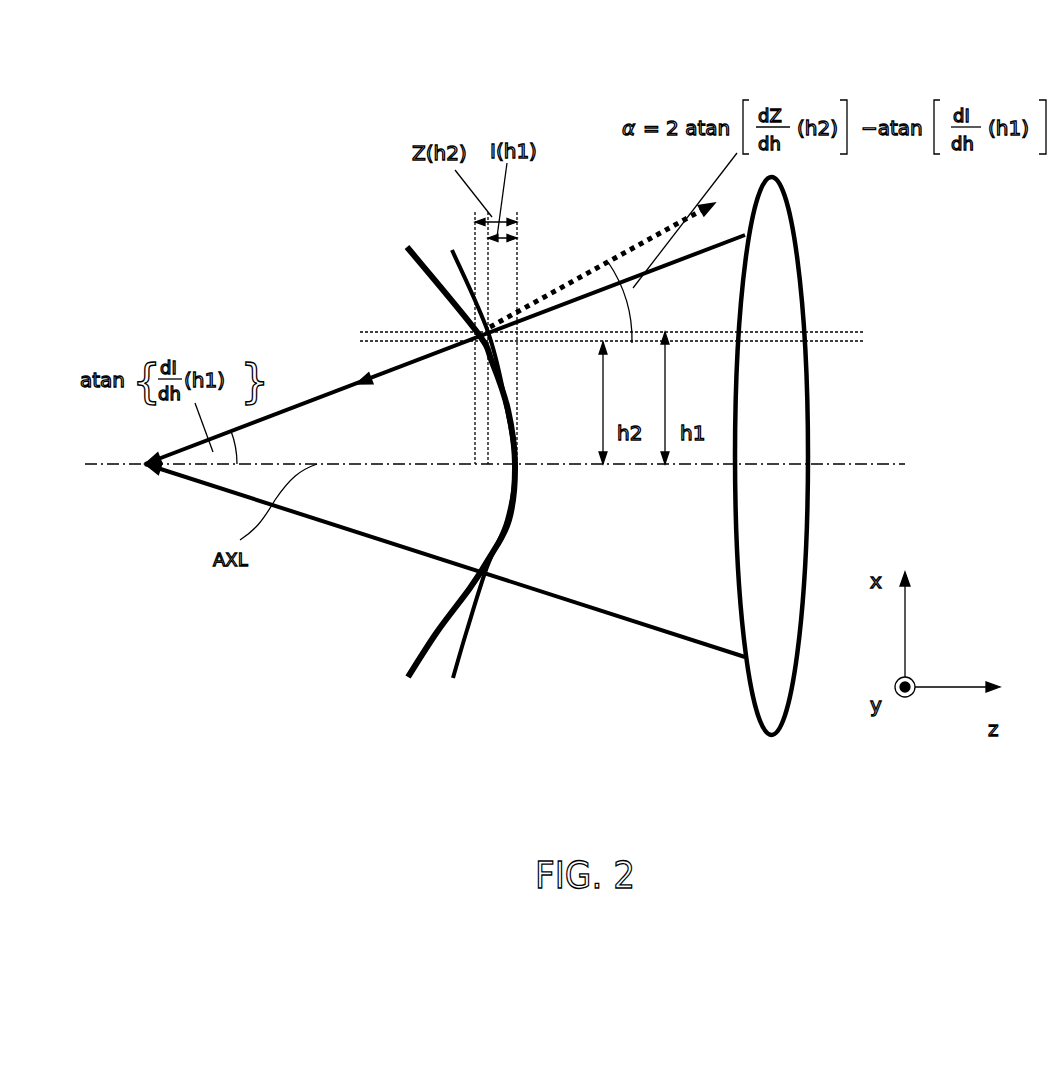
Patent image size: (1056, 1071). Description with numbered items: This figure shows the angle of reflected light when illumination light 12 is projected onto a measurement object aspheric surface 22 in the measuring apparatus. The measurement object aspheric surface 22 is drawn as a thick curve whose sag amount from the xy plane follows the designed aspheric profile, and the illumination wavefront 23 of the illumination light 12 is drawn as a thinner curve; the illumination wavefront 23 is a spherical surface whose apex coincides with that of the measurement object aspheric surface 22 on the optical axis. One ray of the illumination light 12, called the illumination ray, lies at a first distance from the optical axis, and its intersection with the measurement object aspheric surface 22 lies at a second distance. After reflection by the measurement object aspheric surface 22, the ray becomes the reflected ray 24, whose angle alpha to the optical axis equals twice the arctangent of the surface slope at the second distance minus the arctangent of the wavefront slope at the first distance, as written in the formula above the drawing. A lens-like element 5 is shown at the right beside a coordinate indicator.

The illumination light 12 is at (356, 385).
The reflected ray 24 is at (633, 250).
The measurement object aspheric surface 22 is at (433, 653).
The illumination wavefront 23 is at (465, 657).
The lens 5 is at (788, 712).